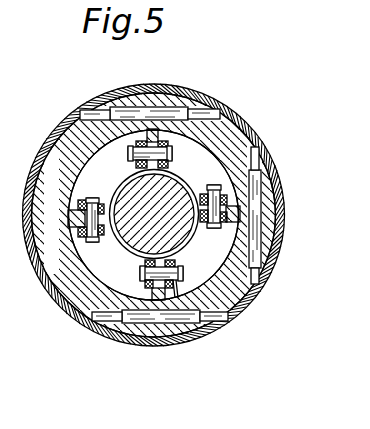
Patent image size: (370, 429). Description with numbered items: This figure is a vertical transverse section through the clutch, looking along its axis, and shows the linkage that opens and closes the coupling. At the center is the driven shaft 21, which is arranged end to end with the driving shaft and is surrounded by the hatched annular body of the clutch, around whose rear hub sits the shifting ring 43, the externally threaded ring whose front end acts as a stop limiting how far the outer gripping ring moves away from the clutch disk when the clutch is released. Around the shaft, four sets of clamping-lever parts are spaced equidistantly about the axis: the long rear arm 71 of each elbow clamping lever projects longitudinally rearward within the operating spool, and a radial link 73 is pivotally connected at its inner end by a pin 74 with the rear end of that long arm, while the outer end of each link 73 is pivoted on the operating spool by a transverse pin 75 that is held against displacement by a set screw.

The driven shaft 21 is at (177, 237).
The shifting ring 43 is at (243, 132).
The long rear arm 71 is at (226, 185).
The radial link 73 is at (116, 314).
The pin 74 is at (114, 163).
The transverse pin 75 is at (176, 112).